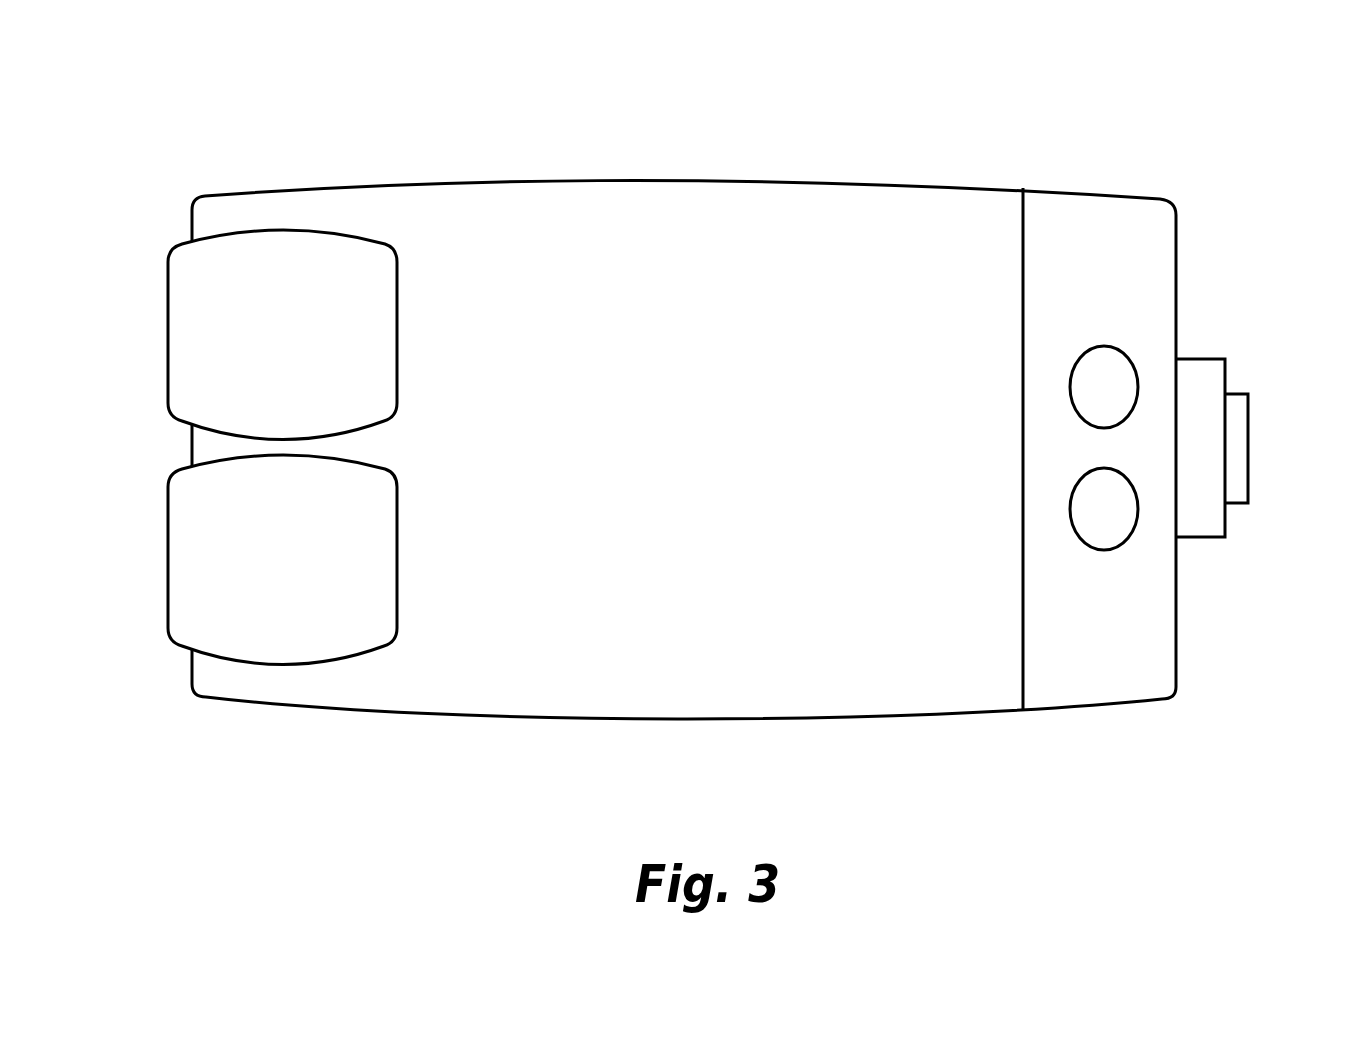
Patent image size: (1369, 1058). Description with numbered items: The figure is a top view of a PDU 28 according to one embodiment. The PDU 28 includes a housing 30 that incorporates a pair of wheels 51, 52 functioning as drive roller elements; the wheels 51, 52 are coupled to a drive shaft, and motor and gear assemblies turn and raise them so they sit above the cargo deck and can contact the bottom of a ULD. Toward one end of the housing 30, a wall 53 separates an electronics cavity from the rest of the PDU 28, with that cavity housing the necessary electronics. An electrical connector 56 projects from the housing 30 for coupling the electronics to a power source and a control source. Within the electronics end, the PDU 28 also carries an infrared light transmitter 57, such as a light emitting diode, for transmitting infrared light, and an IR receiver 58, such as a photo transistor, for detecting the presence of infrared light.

The PDU 28 is at (337, 75).
The housing 30 is at (677, 178).
The wheel 51 is at (168, 279).
The wheel 52 is at (167, 545).
The wall 53 is at (1024, 250).
The electrical connector 56 is at (1249, 461).
The infrared light transmitter 57 is at (1115, 367).
The IR receiver 58 is at (1120, 533).